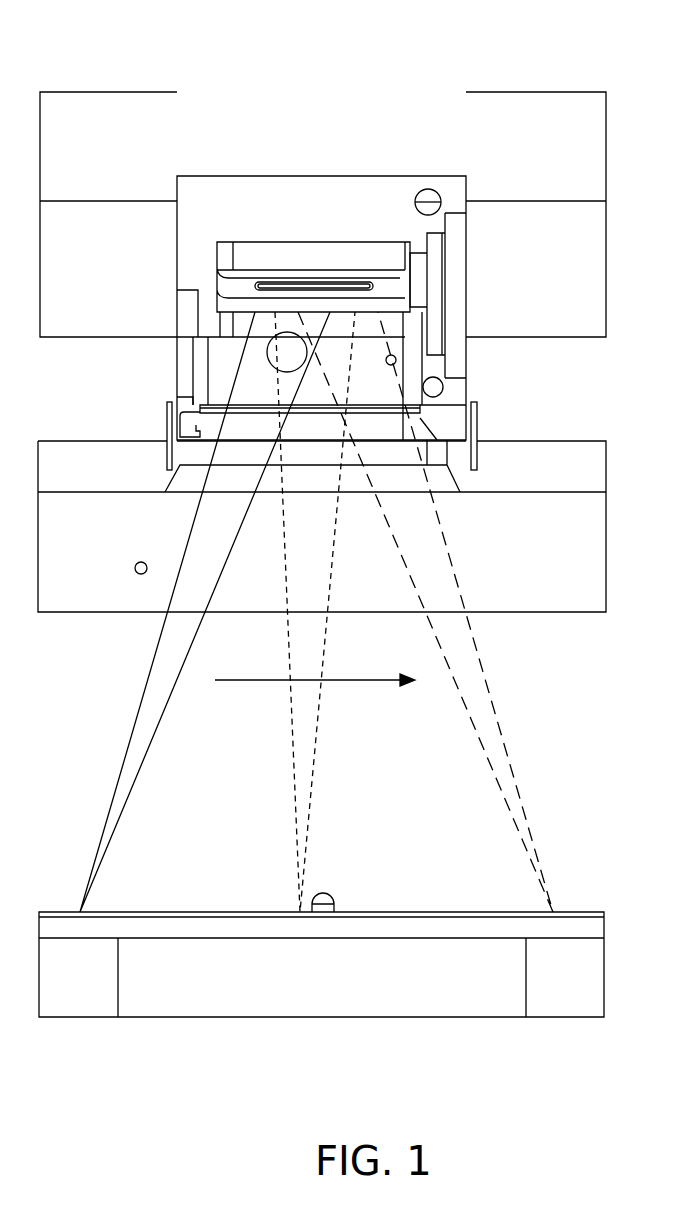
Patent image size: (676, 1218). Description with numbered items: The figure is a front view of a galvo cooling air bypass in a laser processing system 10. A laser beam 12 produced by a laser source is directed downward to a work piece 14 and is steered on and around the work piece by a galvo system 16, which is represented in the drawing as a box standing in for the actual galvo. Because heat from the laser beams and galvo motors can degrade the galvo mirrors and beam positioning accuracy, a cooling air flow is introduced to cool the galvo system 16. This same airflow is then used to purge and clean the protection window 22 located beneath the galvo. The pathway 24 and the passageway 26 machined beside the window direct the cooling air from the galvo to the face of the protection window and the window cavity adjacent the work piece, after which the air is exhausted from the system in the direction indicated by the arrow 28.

The laser processing system 10 is at (363, 1019).
The laser beam 12 is at (163, 645).
The work piece 14 is at (573, 915).
The galvo system 16 is at (322, 250).
The protection window 22 is at (235, 412).
The pathway 24 is at (167, 386).
The passageway 26 is at (182, 425).
The arrow 28 is at (298, 685).